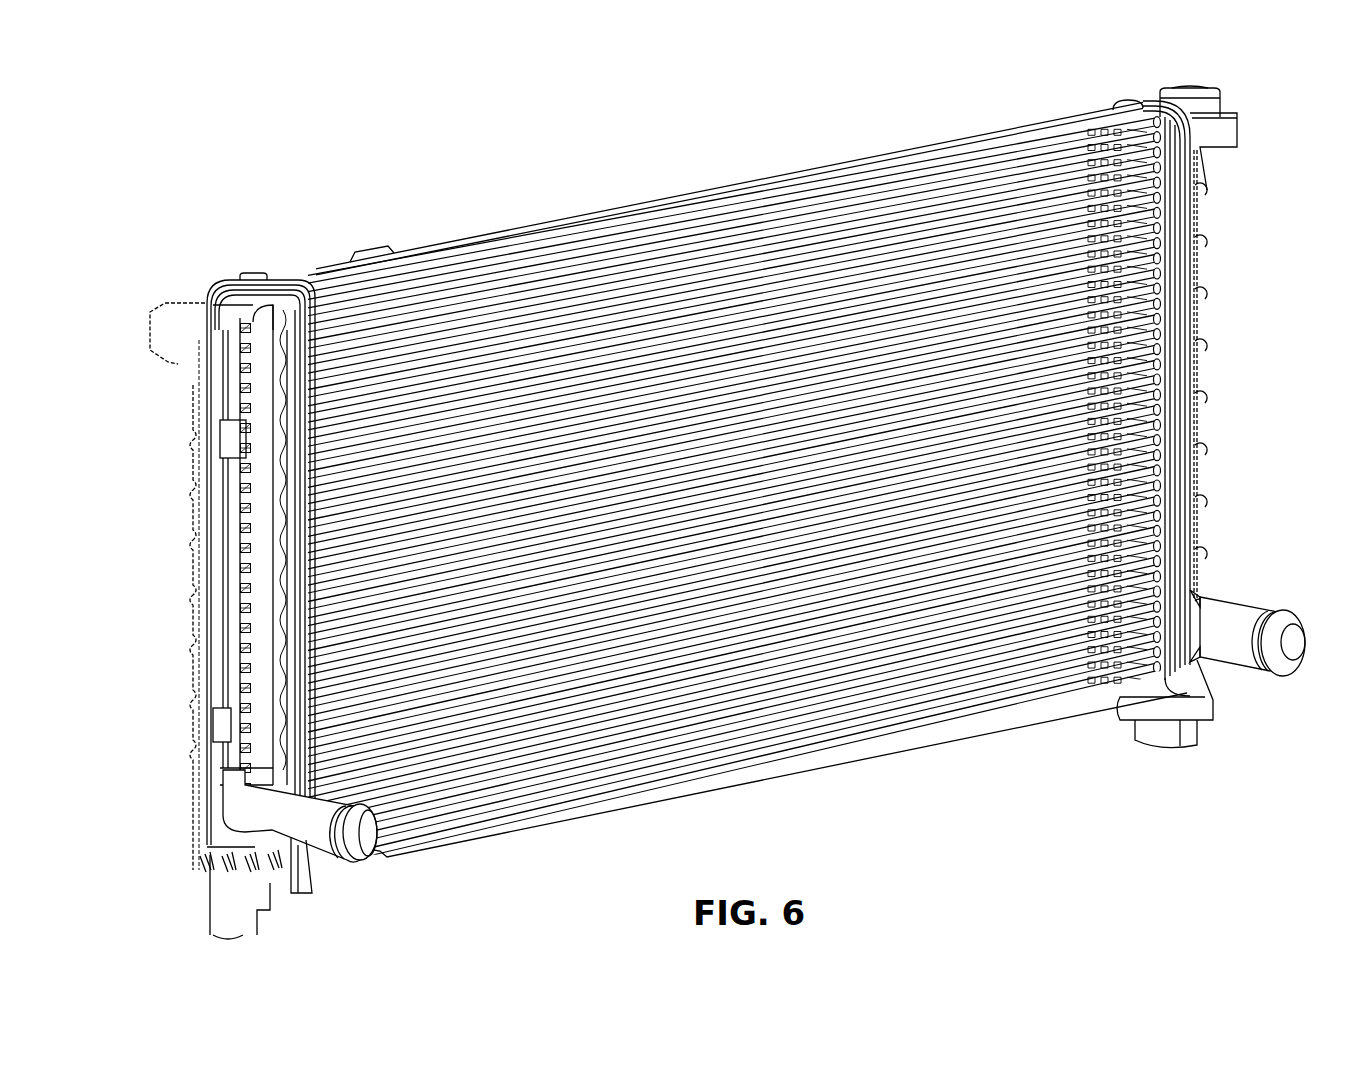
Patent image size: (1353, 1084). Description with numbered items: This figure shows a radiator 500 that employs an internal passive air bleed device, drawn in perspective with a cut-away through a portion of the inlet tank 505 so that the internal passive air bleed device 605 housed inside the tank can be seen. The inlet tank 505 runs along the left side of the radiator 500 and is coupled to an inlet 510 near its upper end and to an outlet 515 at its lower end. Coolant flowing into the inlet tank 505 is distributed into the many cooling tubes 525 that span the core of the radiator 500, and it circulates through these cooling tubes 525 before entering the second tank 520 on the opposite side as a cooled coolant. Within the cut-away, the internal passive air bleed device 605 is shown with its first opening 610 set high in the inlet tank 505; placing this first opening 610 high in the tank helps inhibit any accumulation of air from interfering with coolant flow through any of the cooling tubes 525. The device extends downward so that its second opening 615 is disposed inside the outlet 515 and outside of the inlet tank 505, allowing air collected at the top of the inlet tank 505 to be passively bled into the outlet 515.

The radiator 500 is at (218, 133).
The inlet tank 505 is at (203, 562).
The inlet 510 is at (157, 330).
The outlet 515 is at (352, 855).
The second tank 520 is at (1202, 293).
The cooling tubes 525 is at (650, 176).
The internal passive air bleed device 605 is at (228, 757).
The first opening 610 is at (233, 343).
The second opening 615 is at (300, 843).